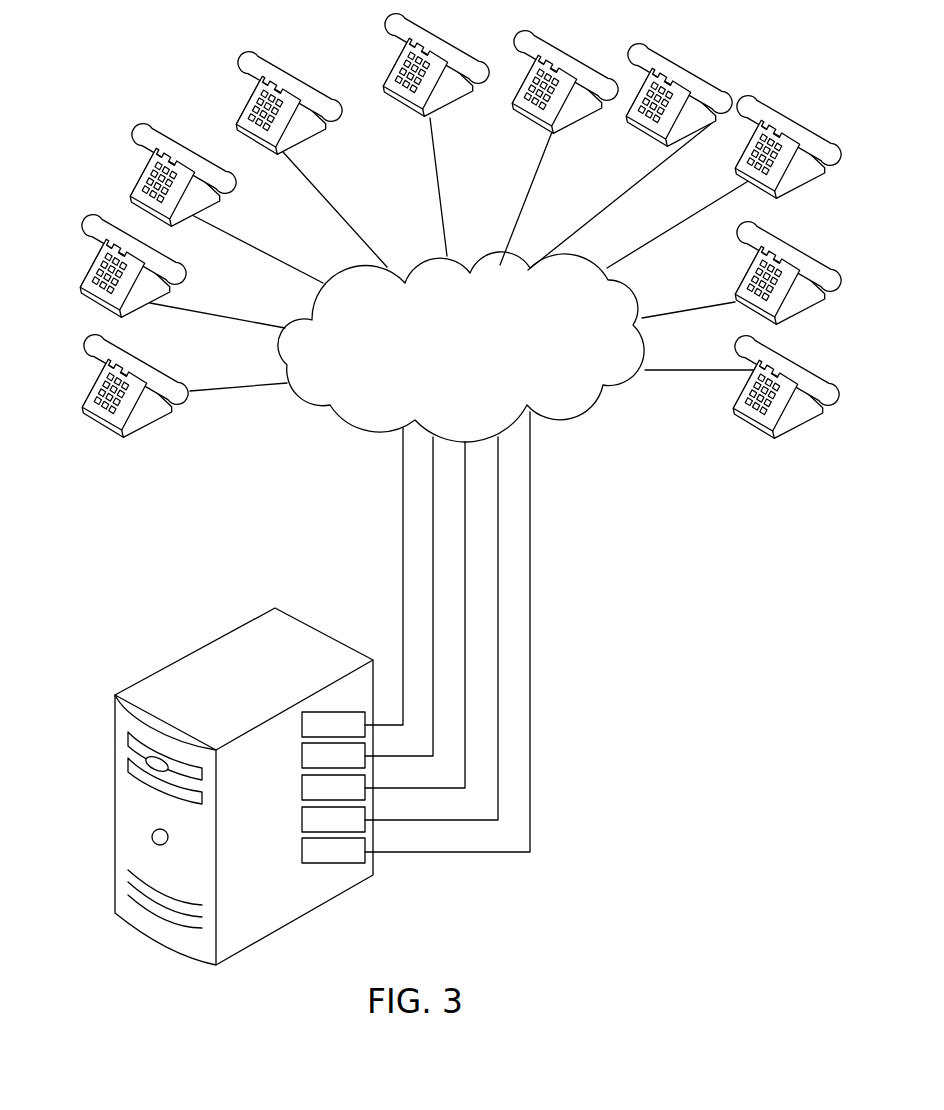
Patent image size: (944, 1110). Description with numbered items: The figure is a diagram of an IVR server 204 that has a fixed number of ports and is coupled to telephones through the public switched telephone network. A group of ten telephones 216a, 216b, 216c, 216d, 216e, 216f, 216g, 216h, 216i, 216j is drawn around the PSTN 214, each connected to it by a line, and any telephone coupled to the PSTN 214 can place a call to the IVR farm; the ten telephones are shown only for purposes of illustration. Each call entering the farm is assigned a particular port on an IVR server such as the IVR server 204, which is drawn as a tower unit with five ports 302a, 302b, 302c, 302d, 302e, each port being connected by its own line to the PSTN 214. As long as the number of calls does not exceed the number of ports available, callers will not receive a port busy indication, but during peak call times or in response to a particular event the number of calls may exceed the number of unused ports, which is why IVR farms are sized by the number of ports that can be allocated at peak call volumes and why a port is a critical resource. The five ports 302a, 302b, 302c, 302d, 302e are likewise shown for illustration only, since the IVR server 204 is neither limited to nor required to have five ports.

The IVR server 204 is at (222, 646).
The PSTN 214 is at (443, 373).
The telephone 216a is at (95, 382).
The telephone 216b is at (93, 263).
The telephone 216c is at (143, 168).
The telephone 216d is at (248, 100).
The telephone 216e is at (396, 60).
The telephone 216f is at (575, 43).
The telephone 216g is at (692, 60).
The telephone 216h is at (798, 107).
The telephone 216i is at (813, 243).
The telephone 216j is at (830, 343).
The port 302a is at (333, 850).
The port 302b is at (333, 819).
The port 302c is at (333, 787).
The port 302d is at (333, 755).
The port 302e is at (333, 724).